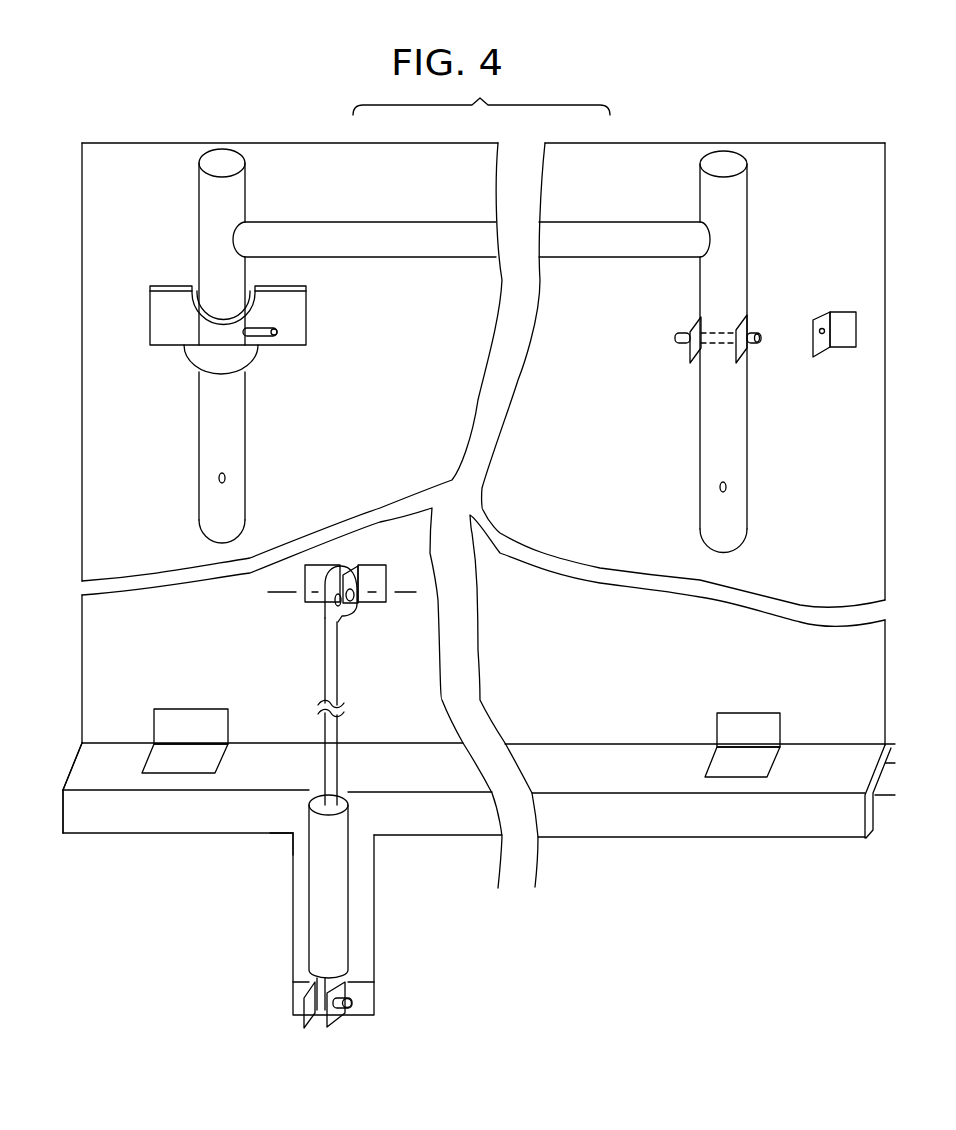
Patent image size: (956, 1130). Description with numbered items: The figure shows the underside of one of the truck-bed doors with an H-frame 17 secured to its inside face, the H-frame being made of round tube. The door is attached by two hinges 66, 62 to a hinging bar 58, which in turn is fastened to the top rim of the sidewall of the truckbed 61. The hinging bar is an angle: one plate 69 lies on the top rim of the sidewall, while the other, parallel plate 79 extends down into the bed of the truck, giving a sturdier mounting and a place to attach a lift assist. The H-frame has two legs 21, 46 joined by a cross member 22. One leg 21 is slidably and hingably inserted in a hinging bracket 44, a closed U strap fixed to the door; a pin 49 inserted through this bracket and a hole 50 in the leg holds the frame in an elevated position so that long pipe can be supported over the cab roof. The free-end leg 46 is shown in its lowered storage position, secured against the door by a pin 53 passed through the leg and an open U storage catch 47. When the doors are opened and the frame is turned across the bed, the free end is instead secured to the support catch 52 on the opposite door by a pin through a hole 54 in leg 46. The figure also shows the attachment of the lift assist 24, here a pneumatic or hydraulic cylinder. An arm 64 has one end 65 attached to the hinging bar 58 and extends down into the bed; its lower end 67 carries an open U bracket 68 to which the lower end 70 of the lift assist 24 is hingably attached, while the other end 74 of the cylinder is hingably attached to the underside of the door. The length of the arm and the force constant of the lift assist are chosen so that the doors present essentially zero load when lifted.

The frame 17 is at (183, 160).
The leg 21 is at (231, 193).
The cross bar 22 is at (425, 233).
The hinging bracket 44 is at (280, 302).
The pin 49 is at (268, 337).
The hole 50 is at (217, 480).
The leg 46 is at (738, 235).
The storage catch 47 is at (698, 331).
The pin 53 is at (755, 335).
The support catch 52 is at (836, 328).
The hole 54 is at (727, 487).
The other end of cylinder 74 is at (325, 613).
The hinging bar 58 is at (758, 831).
The plate of the angle 69 is at (97, 757).
The parallel plate of the angle 79 is at (82, 815).
The truckbed 61 is at (900, 872).
The hinge 66 is at (190, 762).
The hinge 62 is at (727, 770).
The arm 64 is at (295, 875).
The end of arm 65 is at (307, 835).
The lift assist 24 is at (338, 917).
The lower end of the arm 67 is at (365, 973).
The open U bracket 68 is at (305, 1025).
The lower end of the lift assist 70 is at (322, 1023).